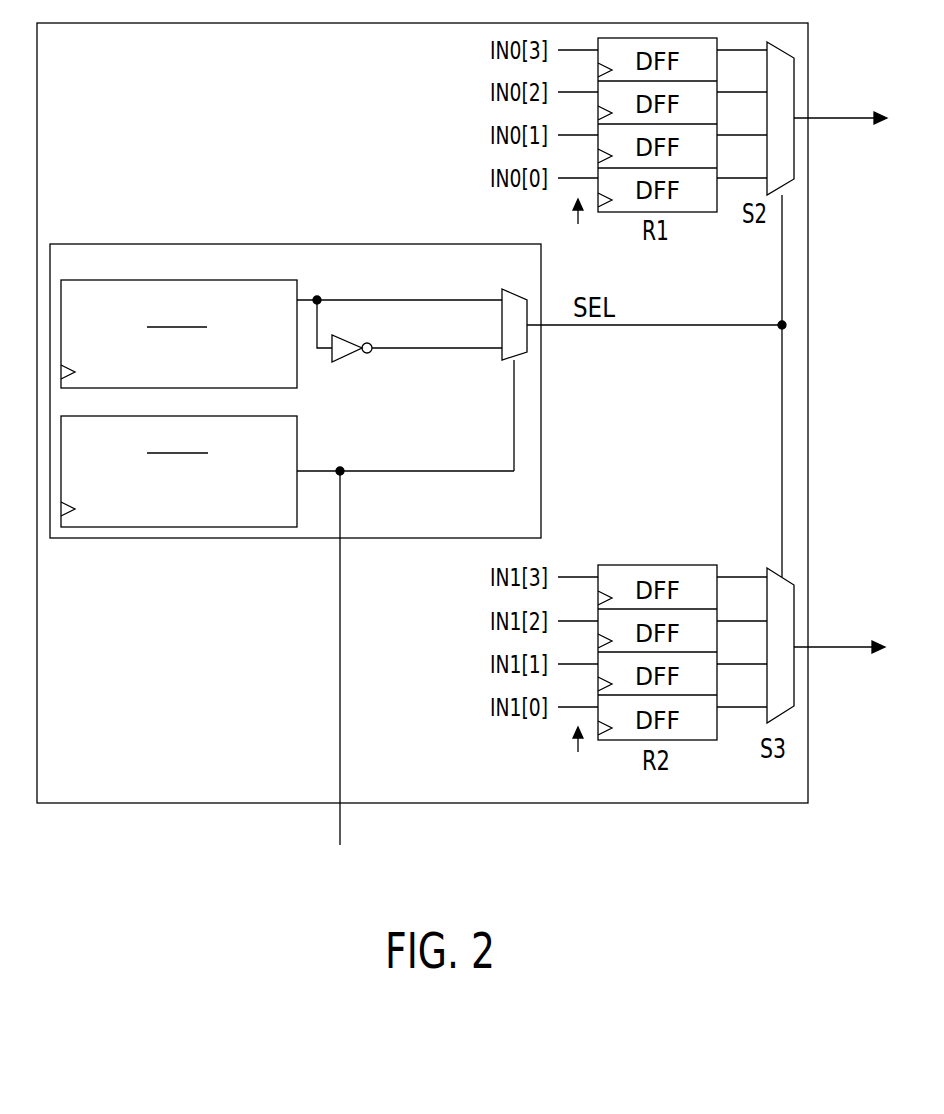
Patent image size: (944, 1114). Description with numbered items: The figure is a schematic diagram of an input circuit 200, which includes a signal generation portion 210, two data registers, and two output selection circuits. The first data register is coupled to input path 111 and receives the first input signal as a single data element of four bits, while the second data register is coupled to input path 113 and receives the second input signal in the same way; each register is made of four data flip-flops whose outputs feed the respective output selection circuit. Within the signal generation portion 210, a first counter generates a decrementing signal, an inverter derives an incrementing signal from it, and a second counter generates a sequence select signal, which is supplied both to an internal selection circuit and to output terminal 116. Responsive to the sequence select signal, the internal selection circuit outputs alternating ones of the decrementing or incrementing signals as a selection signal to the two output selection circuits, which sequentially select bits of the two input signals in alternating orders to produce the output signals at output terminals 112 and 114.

The input circuit 200 is at (133, 78).
The signal generation portion 210 is at (507, 525).
The input path 111 is at (579, 231).
The output terminal 112 is at (840, 120).
The input path 113 is at (580, 760).
The output terminal 114 is at (839, 648).
The output terminal 116 is at (317, 658).